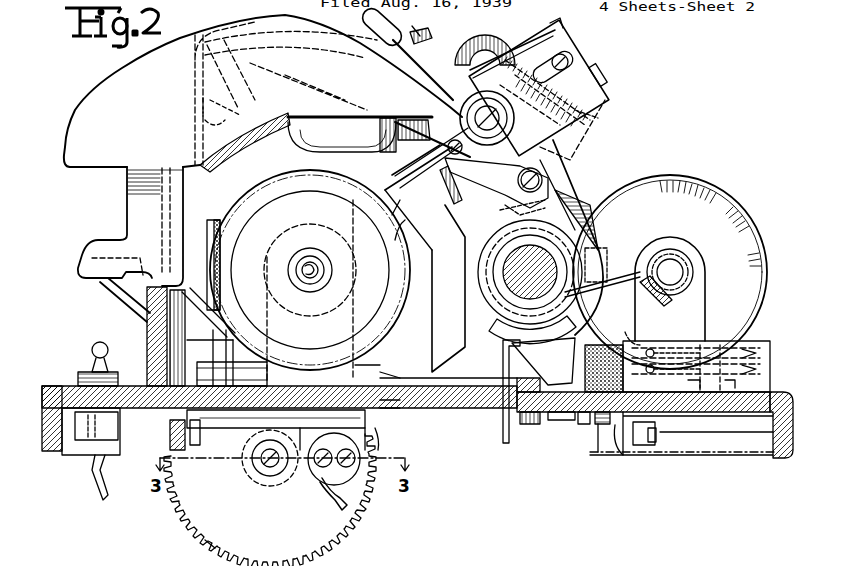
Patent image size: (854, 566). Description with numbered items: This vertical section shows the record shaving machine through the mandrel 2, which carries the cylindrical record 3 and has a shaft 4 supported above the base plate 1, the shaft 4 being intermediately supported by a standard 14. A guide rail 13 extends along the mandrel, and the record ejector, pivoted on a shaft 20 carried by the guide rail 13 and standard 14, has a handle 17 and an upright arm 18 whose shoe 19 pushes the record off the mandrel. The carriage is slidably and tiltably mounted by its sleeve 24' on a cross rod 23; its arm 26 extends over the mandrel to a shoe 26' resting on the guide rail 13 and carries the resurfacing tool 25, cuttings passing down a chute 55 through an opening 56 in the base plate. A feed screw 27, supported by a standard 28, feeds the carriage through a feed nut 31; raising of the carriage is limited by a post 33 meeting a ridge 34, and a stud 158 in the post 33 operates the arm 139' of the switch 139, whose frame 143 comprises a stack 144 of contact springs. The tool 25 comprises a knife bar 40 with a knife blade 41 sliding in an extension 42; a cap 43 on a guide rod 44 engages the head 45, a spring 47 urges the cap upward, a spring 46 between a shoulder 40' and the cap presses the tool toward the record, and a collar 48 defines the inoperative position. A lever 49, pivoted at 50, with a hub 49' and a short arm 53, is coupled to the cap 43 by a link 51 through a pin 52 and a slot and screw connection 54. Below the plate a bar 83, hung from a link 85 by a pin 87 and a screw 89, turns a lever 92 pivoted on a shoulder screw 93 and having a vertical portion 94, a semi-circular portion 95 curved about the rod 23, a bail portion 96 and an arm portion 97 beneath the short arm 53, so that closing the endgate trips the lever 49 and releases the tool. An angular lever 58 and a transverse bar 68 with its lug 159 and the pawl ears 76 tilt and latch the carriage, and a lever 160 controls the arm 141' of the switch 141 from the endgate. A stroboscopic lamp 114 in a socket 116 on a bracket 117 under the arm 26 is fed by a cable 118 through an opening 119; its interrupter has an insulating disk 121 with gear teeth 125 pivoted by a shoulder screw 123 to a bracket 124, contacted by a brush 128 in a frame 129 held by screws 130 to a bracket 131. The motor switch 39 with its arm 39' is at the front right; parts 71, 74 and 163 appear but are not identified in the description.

The base plate 1 is at (42, 430).
The mandrel 2 is at (368, 295).
The cylindrical record 3 is at (392, 287).
The shaft 4 is at (317, 290).
The guide rail 13 is at (147, 335).
The standard 14 is at (355, 365).
The handle 17 is at (125, 292).
The upright arm 18 is at (240, 340).
The shoe 19 is at (212, 222).
The shaft 20 is at (283, 368).
The cross rod 23 is at (518, 282).
The sleeve 24' is at (530, 280).
The resurfacing tool 25 is at (392, 215).
The arm 26 is at (263, 91).
The shoe 26' is at (130, 226).
The feed screw 27 is at (695, 262).
The standard 28 is at (695, 314).
The feed nut 31 is at (690, 290).
The post 33 is at (543, 365).
The ridge 34 is at (522, 350).
The switch 39 is at (70, 421).
The arm 39' is at (69, 354).
The knife bar 40 is at (462, 188).
The shoulder 40' is at (580, 130).
The knife blade 41 is at (394, 235).
The extension 42 is at (510, 35).
The cap 43 is at (606, 102).
The guide rod 44 is at (460, 118).
The head 45 is at (600, 80).
The compression spring 46 is at (598, 118).
The compression spring 47 is at (558, 30).
The collar 48 is at (425, 178).
The lever 49 is at (382, 27).
The hub 49' is at (530, 104).
The pivot 50 is at (530, 152).
The link 51 is at (518, 42).
The pin 52 is at (412, 160).
The short arm 53 is at (455, 105).
The slot and screw connection 54 is at (578, 58).
The chute 55 is at (425, 281).
The opening 56 is at (380, 372).
The angular lever 58 is at (150, 322).
The bar 68 is at (172, 437).
The washer 71 is at (190, 435).
The bracket 74 is at (198, 290).
The ears 76 is at (268, 76).
The bar 83 is at (550, 425).
The link 85 is at (578, 425).
The pin 87 is at (528, 425).
The screw 89 is at (605, 425).
The lever 92 is at (628, 186).
The shoulder screw 93 is at (575, 172).
The lower vertical portion 94 is at (503, 425).
The semi-circular portion 95 is at (598, 305).
The bail portion 96 is at (525, 207).
The arm portion 97 is at (537, 180).
The stroboscopic lamp 114 is at (335, 132).
The socket 116 is at (236, 108).
The bracket 117 is at (195, 70).
The cable 118 is at (425, 30).
The opening 119 is at (415, 28).
The disk 121 is at (190, 515).
The shoulder screw 123 is at (280, 470).
The bracket 124 is at (245, 450).
The gear teeth 125 is at (205, 540).
The brush 128 is at (345, 495).
The frame 129 is at (385, 432).
The screws 130 is at (385, 405).
The bracket 131 is at (310, 470).
The switch 139 is at (692, 347).
The operating arm 139' is at (644, 455).
The switch 141 is at (716, 462).
The operating arm 141' is at (682, 431).
The frame 143 is at (767, 369).
The stack 144 is at (725, 345).
The stud 158 is at (625, 332).
The lug 159 is at (205, 448).
The lever 160 is at (598, 455).
The clamp 163 is at (470, 35).